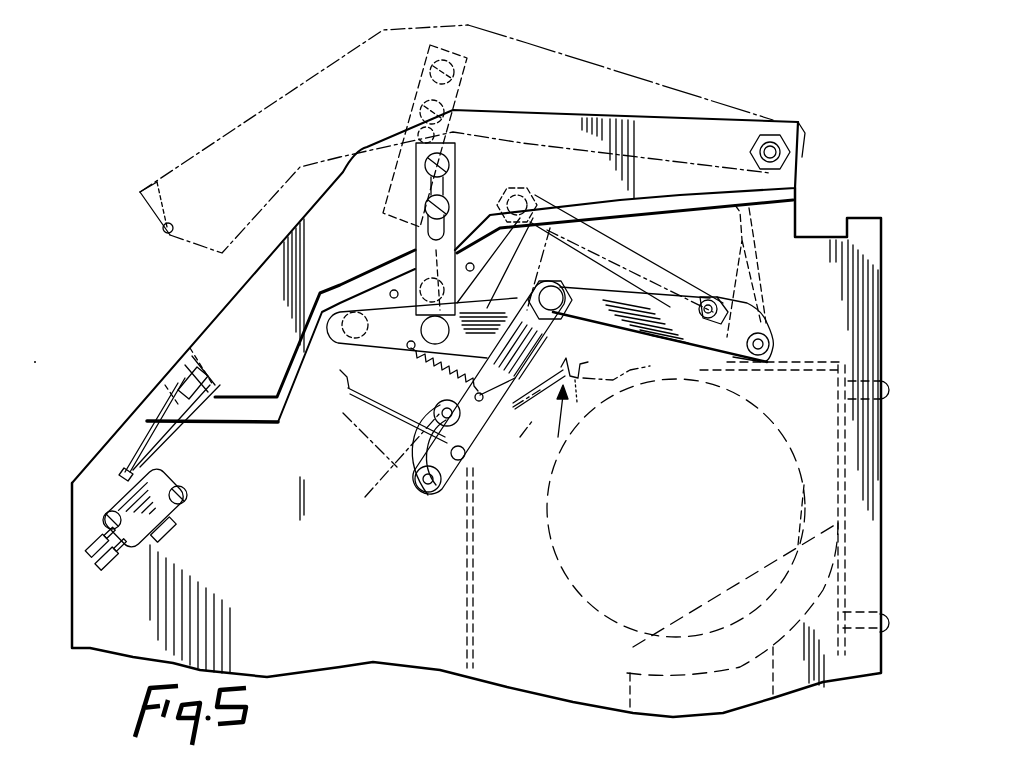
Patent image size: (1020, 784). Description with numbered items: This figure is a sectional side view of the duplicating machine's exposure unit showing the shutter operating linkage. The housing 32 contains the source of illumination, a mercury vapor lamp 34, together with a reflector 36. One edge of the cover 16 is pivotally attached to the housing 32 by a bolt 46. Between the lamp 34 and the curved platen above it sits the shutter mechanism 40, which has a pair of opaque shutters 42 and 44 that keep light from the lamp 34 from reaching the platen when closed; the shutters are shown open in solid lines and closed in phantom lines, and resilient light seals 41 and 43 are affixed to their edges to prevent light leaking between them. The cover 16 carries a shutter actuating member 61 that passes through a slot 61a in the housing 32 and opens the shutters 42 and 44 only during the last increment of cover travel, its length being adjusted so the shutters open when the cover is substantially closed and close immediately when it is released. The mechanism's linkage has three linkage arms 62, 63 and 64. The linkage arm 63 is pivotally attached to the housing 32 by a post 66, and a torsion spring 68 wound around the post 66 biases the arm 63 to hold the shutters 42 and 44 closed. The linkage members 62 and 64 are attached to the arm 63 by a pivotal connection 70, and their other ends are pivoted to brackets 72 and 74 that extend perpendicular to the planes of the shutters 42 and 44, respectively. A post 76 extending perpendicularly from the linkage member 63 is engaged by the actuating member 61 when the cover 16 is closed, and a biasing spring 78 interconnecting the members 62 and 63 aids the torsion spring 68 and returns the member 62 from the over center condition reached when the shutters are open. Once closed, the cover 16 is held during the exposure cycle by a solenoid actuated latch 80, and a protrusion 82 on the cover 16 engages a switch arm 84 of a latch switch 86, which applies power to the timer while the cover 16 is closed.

The cover 16 is at (248, 120).
The housing 32 is at (882, 458).
The mercury vapor lamp 34 is at (577, 590).
The reflector 36 is at (630, 670).
The shutter mechanism 40 is at (553, 422).
The resilient light seal 41 is at (580, 400).
The shutter 42 is at (385, 447).
The resilient light seal 43 is at (605, 373).
The shutter 44 is at (750, 281).
The bolt 46 is at (771, 143).
The shutter actuating member 61 is at (393, 183).
The slot 61a is at (452, 255).
The linkage arm 62 is at (436, 412).
The linkage arm 63 is at (397, 259).
The linkage arm 64 is at (622, 307).
The post 66 is at (345, 348).
The torsion spring 68 is at (390, 291).
The pivotal connection 70 is at (522, 203).
The bracket 72 is at (410, 487).
The bracket 74 is at (762, 320).
The post 76 is at (452, 258).
The biasing spring 78 is at (427, 372).
The solenoid actuated latch 80 is at (200, 382).
The protrusion 82 is at (170, 225).
The switch arm 84 is at (187, 410).
The latch switch 86 is at (163, 487).